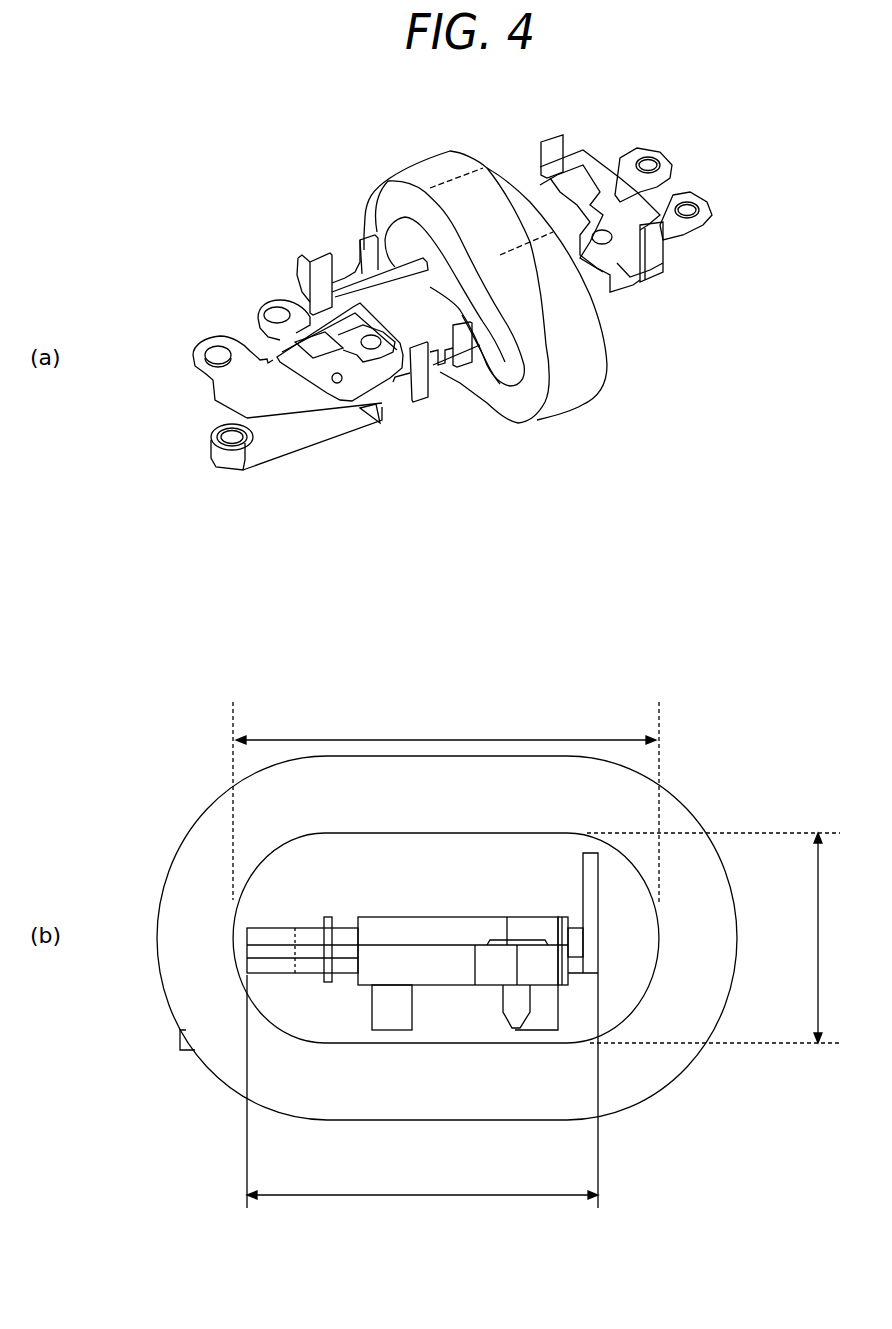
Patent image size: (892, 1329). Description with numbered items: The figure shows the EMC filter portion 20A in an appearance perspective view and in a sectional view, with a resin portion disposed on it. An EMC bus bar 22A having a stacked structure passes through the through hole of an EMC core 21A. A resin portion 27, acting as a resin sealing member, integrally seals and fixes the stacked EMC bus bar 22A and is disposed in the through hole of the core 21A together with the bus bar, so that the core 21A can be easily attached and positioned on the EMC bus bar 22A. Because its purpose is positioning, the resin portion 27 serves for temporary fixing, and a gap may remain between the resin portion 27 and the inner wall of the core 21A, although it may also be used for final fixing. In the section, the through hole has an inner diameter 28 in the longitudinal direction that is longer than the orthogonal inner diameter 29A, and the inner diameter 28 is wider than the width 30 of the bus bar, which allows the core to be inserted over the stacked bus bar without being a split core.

The EMC filter portion 20A is at (226, 147).
The EMC core 21A is at (577, 400).
The EMC bus bar 22A is at (603, 300).
The resin portion 27 is at (507, 365).
The inner diameter of through hole in longitudinal direction 28 is at (446, 802).
The inner diameter of through hole in transverse direction 29A is at (713, 938).
The width of direct-current bus bar in cross-sectional longitudinal direction 30 is at (422, 1091).